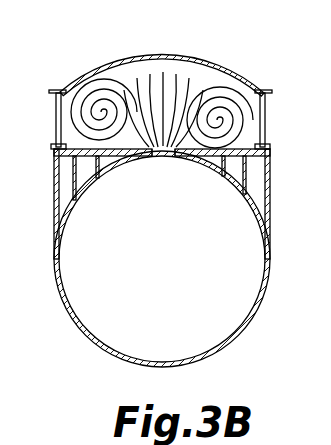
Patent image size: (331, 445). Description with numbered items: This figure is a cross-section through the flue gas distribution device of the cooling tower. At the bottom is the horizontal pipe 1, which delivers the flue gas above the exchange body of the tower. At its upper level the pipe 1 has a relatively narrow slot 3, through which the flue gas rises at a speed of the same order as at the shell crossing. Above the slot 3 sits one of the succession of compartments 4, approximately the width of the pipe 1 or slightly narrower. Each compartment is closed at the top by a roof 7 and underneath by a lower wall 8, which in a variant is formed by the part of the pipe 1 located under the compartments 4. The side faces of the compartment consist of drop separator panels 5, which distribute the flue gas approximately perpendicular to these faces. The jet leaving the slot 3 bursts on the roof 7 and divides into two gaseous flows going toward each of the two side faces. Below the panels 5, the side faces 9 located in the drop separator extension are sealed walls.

The horizontal pipe 1 is at (58, 312).
The slot 3 is at (173, 156).
The compartments 4 is at (205, 75).
The drop separator panels 5 is at (56, 112).
The roof 7 is at (108, 62).
The lower wall 8 is at (100, 148).
The side faces 9 is at (54, 183).